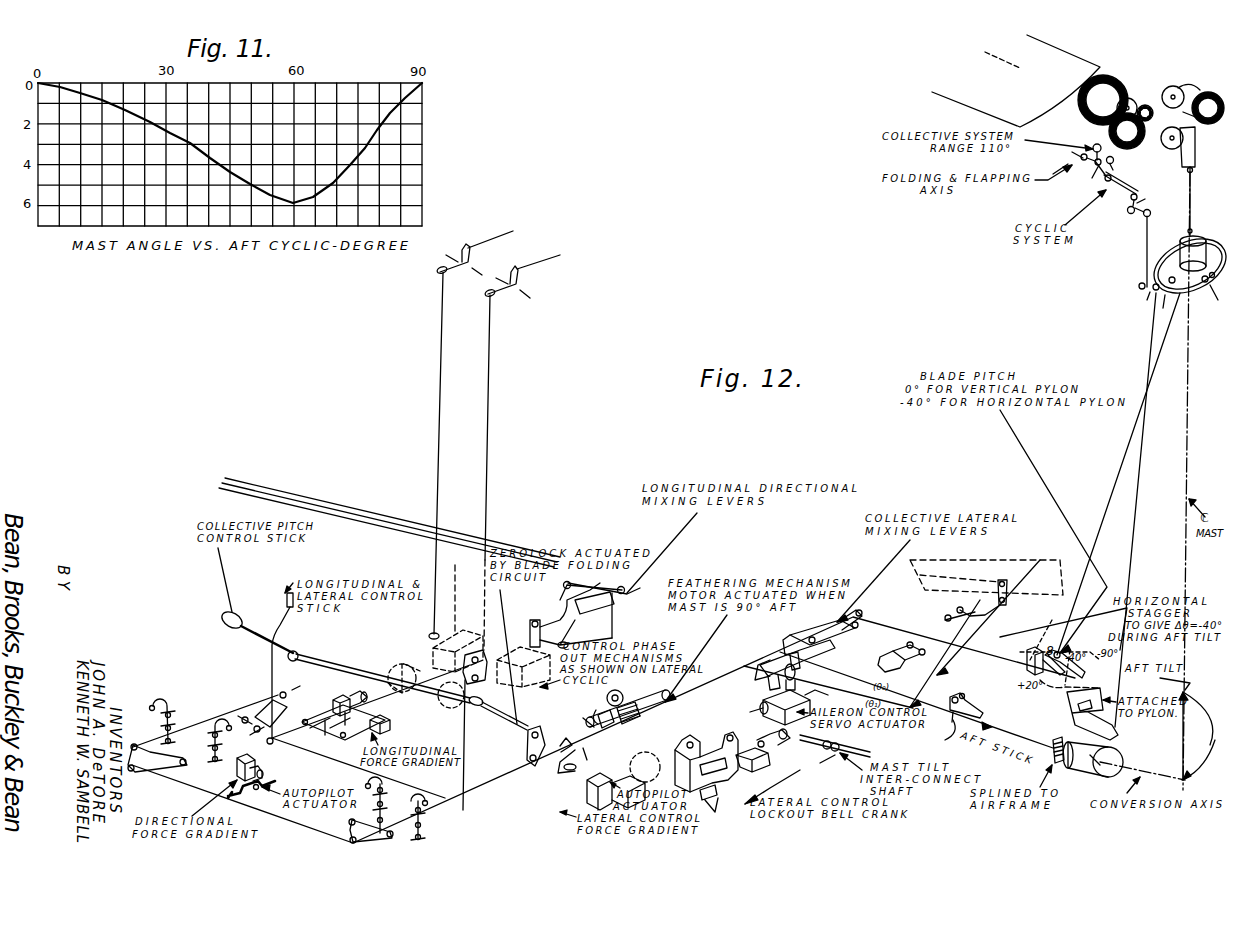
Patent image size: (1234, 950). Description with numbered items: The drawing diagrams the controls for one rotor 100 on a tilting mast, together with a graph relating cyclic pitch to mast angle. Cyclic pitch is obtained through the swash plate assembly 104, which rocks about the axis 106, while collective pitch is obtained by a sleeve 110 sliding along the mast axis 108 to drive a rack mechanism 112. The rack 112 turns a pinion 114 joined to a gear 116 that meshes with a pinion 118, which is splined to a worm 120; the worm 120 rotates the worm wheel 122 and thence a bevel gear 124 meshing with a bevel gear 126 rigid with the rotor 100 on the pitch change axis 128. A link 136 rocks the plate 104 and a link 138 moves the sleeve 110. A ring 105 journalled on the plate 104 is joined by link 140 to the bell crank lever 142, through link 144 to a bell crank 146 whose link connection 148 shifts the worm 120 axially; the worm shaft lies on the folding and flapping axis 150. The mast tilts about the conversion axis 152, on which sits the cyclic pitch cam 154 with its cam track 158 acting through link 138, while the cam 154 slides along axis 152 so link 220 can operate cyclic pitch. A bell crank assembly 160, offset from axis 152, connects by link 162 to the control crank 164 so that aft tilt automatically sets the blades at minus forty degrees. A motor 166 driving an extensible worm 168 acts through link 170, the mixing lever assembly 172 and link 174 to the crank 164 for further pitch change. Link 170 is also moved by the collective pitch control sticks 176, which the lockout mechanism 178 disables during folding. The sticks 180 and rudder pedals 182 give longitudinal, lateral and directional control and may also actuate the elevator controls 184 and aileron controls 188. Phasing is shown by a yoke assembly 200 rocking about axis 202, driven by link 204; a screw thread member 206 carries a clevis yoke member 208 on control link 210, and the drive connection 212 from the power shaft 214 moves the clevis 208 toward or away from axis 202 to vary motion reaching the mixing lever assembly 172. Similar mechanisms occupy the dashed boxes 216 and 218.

The rotor 100 is at (953, 92).
The swash plate assembly 104 is at (1198, 287).
The ring 105 is at (1218, 242).
The rocking axis 106 is at (1141, 283).
The mast axis 108 is at (1190, 372).
The sleeve 110 is at (1180, 248).
The rack mechanism 112 is at (1196, 152).
The pinion 114 is at (1184, 136).
The gear 116 is at (1206, 95).
The pinion 118 is at (1186, 90).
The worm 120 is at (1138, 104).
The worm wheel 122 is at (1147, 104).
The bevel gear 124 is at (1133, 152).
The bevel gear 126 is at (1116, 76).
The pitch change axis 128 is at (1002, 71).
The link 136 is at (1118, 473).
The link 138 is at (1145, 428).
The link 140 is at (1147, 240).
The bell crank lever 142 is at (1148, 208).
The link 144 is at (1118, 200).
The bell crank 146 is at (1092, 172).
The link connection 148 is at (1094, 146).
The folding and flapping axis 150 is at (1048, 188).
The conversion axis 152 is at (1163, 778).
The cyclic pitch cam 154 is at (1082, 765).
The cam track 158 is at (1112, 735).
The bell crank assembly 160 is at (1030, 672).
The link 162 is at (1005, 690).
The control crank 164 is at (950, 736).
The motor 166 is at (605, 700).
The extensible worm 168 is at (643, 706).
The link 170 is at (770, 660).
The mixing lever assembly 172 is at (815, 637).
The link 174 is at (885, 672).
The collective pitch control sticks 176 is at (247, 625).
The lockout mechanism 178 is at (588, 748).
The sticks 180 is at (492, 347).
The rudder pedals 182 is at (220, 722).
The elevator controls 184 is at (440, 333).
The aileron controls 188 is at (953, 616).
The yoke assembly 200 is at (800, 745).
The axis 202 is at (705, 748).
The link 204 is at (667, 760).
The screw thread member 206 is at (700, 780).
The clevis yoke member 208 is at (743, 735).
The control link 210 is at (765, 730).
The drive connection 212 is at (800, 770).
The power shaft 214 is at (852, 748).
The phase-out mechanism 216 is at (491, 635).
The phase-out mechanism 218 is at (499, 699).
The link 220 is at (1053, 752).